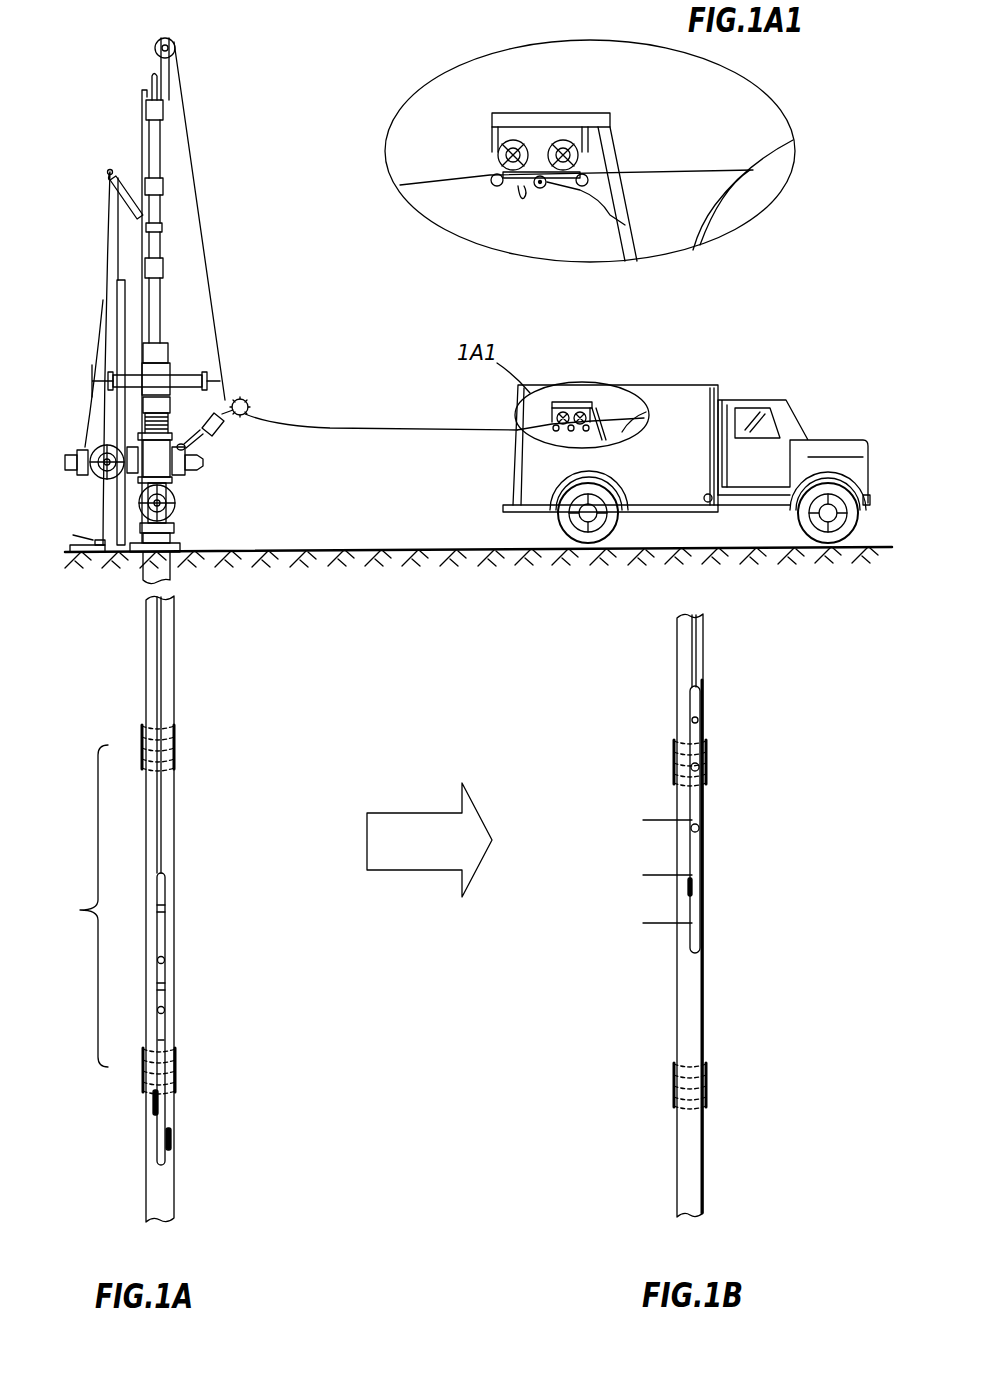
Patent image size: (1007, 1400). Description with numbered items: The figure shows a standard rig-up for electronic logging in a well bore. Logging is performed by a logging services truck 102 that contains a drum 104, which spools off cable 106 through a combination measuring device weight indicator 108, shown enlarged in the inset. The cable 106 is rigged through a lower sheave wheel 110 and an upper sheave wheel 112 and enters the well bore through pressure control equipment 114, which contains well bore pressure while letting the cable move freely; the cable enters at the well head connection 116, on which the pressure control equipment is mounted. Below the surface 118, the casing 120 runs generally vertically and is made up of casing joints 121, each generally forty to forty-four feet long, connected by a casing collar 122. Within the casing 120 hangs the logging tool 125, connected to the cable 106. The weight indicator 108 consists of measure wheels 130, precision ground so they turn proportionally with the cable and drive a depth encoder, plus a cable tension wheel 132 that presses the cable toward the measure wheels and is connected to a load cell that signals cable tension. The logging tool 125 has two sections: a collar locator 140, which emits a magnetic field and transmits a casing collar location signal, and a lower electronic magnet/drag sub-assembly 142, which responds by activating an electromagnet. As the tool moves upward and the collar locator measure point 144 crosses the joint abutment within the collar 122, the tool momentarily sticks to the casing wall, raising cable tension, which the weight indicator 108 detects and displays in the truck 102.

In FIG. 1A, the logging services truck 102 is at (775, 398).
In FIG. 1A, the drum 104 is at (633, 425).
In FIG. 1A1, the drum 104 is at (758, 165).
In FIG. 1A, the cable 106 is at (432, 430).
In FIG. 1A1, the cable 106 is at (470, 180).
In FIG. 1A, the combination measuring device weight indicator 108 is at (580, 405).
In FIG. 1A1, the combination measuring device weight indicator 108 is at (785, 117).
In FIG. 1A, the lower sheave wheel 110 is at (233, 402).
In FIG. 1A, the upper sheave wheel 112 is at (175, 43).
In FIG. 1A, the pressure control equipment 114 is at (162, 147).
In FIG. 1A, the well head connection 116 is at (203, 463).
In FIG. 1A, the surface 118 is at (305, 551).
In FIG. 1A, the casing 120 is at (145, 652).
In FIG. 1A, the casing joints 121 is at (76, 906).
In FIG. 1A, the casing collar 122 is at (178, 745).
In FIG. 1B, the casing collar 122 is at (672, 772).
In FIG. 1A, the logging tool 125 is at (162, 937).
In FIG. 1A1, the measure wheels 130 is at (517, 138).
In FIG. 1A1, the cable tension wheel 132 is at (540, 187).
In FIG. 1A, the collar locator 140 is at (165, 983).
In FIG. 1A, the lower electronic magnet/drag sub-assembly 142 is at (164, 1033).
In FIG. 1B, the lower electronic magnet/drag sub-assembly 142 is at (700, 886).
In FIG. 1A, the collar locator measure point 144 is at (164, 960).
In FIG. 1B, the collar locator measure point 144 is at (702, 766).